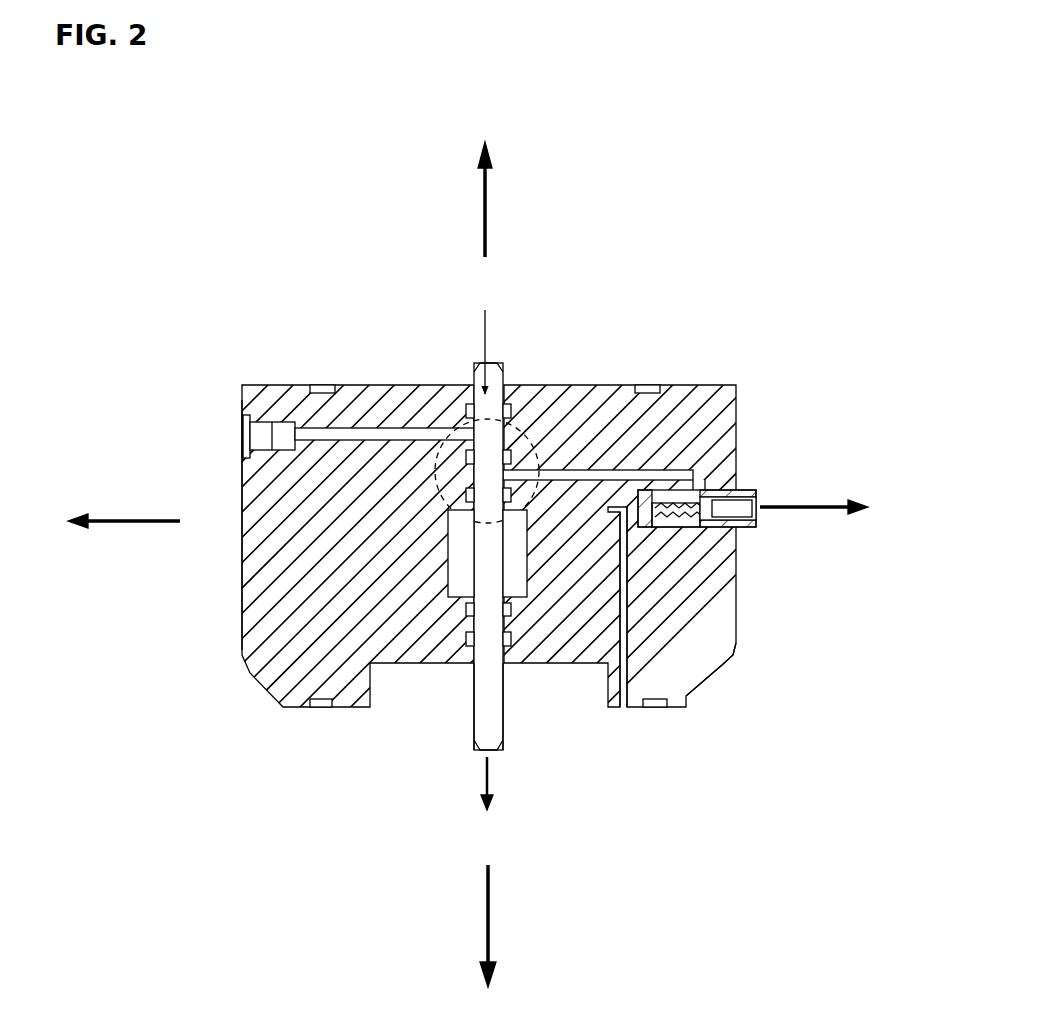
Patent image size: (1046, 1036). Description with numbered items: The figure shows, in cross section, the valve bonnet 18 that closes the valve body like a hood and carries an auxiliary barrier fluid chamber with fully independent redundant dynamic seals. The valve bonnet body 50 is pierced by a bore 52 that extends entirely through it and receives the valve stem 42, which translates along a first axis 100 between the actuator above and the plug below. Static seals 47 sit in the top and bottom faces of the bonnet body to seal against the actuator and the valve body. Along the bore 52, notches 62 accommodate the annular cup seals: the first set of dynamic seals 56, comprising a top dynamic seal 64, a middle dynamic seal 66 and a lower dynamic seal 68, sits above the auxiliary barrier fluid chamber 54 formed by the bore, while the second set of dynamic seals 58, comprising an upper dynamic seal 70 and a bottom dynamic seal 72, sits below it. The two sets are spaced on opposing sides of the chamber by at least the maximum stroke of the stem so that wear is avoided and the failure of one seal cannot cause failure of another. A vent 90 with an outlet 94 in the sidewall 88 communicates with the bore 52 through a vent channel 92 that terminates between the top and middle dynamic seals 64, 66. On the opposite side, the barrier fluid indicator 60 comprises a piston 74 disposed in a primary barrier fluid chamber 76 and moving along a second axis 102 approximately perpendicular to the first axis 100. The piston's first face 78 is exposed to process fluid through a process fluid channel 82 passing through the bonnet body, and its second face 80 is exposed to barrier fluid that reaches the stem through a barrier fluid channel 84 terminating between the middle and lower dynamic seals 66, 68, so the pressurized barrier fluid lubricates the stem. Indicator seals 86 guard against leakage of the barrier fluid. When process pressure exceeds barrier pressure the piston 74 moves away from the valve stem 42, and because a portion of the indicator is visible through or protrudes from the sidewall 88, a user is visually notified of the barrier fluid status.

The valve bonnet 18 is at (687, 182).
The valve stem 42 is at (478, 703).
The static seals 47 is at (325, 385).
The valve bonnet body 50 is at (302, 574).
The bore 52 is at (495, 690).
The auxiliary barrier fluid chamber 54 is at (455, 540).
The first set of dynamic seals 56 is at (462, 404).
The second set of dynamic seals 58 is at (460, 655).
The barrier fluid indicator 60 is at (764, 490).
The notches 62 is at (466, 457).
The top dynamic seal 64 is at (507, 457).
The middle dynamic seal 66 is at (585, 420).
The lower dynamic seal 68 is at (466, 492).
The upper dynamic seal 70 is at (457, 641).
The bottom dynamic seal 72 is at (505, 600).
The piston 74 is at (655, 505).
The primary barrier fluid chamber 76 is at (667, 484).
The first face 78 is at (715, 673).
The second face 80 is at (650, 510).
The process fluid channel 82 is at (625, 707).
The barrier fluid channel 84 is at (730, 442).
The indicator seals 86 is at (735, 462).
The sidewall 88 is at (242, 566).
The vent 90 is at (214, 428).
The vent channel 92 is at (310, 428).
The outlet 94 is at (240, 447).
The first axis 100 is at (485, 205).
The second axis 102 is at (104, 525).